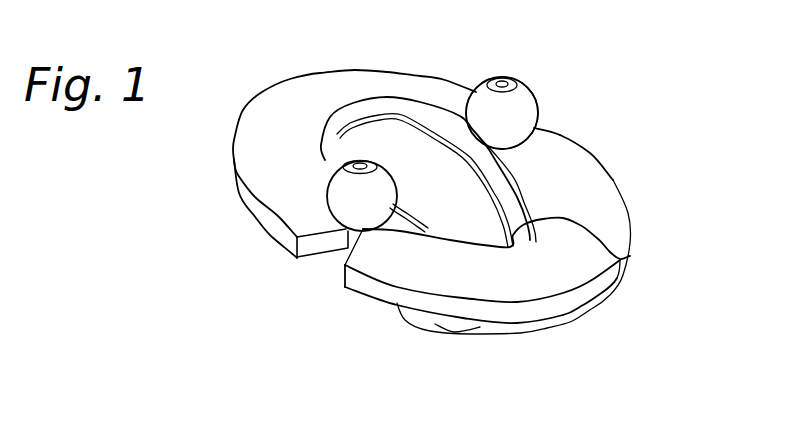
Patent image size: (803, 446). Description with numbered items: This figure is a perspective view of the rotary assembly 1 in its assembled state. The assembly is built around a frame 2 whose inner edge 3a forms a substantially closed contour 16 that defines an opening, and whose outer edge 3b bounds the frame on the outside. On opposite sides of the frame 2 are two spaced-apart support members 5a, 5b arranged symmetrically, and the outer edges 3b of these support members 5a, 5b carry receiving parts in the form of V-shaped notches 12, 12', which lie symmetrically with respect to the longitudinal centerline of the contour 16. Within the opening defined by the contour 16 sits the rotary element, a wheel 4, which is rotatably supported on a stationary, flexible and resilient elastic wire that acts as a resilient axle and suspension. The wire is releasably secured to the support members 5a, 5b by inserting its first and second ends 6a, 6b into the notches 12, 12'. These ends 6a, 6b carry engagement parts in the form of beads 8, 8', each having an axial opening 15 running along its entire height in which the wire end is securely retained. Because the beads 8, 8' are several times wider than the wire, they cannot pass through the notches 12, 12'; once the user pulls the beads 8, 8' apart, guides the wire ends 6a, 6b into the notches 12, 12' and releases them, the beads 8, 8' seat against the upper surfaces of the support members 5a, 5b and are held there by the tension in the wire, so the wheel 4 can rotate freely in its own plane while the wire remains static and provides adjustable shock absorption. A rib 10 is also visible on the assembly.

The rotary assembly 1 is at (258, 272).
The frame 2 is at (592, 197).
The inner edge 3a is at (512, 253).
The outer edge 3b is at (630, 215).
The wheel 4 is at (363, 143).
The support member 5a is at (428, 273).
The support member 5b is at (580, 153).
The first end of elastic wire 6a is at (492, 82).
The second end of elastic wire 6b is at (341, 166).
The bead 8 is at (301, 205).
The bead 8' is at (535, 107).
The rib 10 is at (387, 110).
The notch 12 is at (293, 275).
The notch 12' is at (585, 112).
The axial opening 15 is at (522, 84).
The contour 16 is at (593, 253).